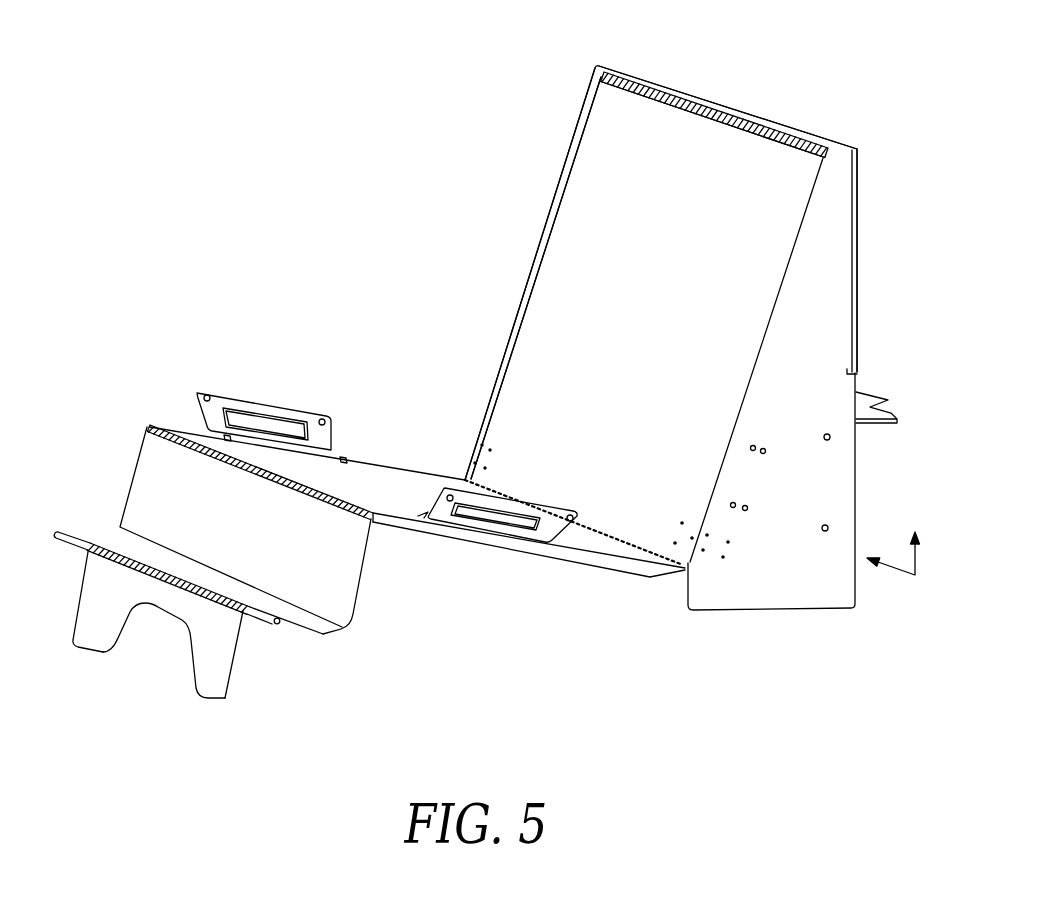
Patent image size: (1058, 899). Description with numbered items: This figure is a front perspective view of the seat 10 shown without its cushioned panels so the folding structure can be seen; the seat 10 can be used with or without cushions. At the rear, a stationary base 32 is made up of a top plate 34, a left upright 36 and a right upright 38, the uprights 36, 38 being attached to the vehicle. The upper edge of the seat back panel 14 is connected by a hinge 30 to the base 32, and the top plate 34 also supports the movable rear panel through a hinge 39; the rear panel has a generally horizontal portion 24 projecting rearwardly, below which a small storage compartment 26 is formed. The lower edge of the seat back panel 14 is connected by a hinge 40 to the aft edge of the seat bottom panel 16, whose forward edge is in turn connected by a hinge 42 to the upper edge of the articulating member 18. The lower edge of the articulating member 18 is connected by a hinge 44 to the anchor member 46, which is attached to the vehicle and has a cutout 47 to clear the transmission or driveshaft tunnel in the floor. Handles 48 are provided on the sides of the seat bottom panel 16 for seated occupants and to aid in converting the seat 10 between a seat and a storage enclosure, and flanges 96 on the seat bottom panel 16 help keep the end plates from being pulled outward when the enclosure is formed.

The seat 10 is at (204, 64).
The seat back panel 14 is at (626, 315).
The seat bottom panel 16 is at (403, 478).
The articulating member 18 is at (137, 503).
The horizontal portion 24 is at (867, 397).
The storage compartment 26 is at (891, 456).
The hinge 30 is at (727, 126).
The stationary base 32 is at (860, 119).
The top plate 34 is at (688, 102).
The left upright 36 is at (843, 257).
The right upright 38 is at (559, 178).
The hinge 39 is at (750, 113).
The hinge 40 is at (627, 541).
The hinge 42 is at (243, 468).
The hinge 44 is at (108, 561).
The anchor member 46 is at (219, 657).
The cutout 47 is at (140, 658).
The handles 48 is at (263, 412).
The flanges 96 is at (576, 556).